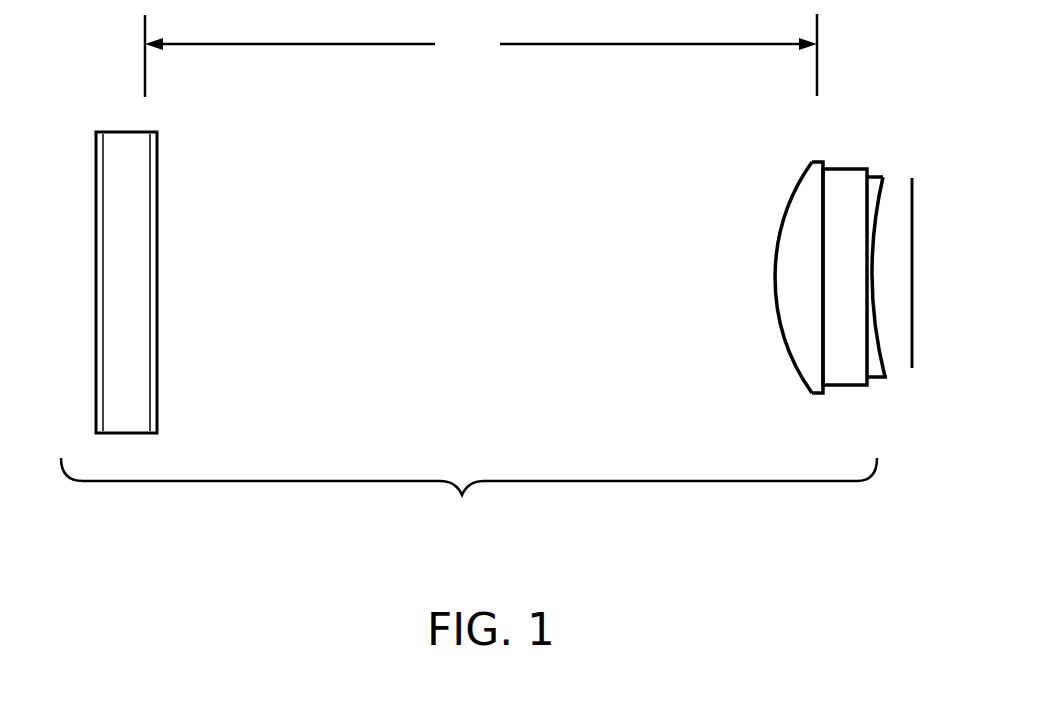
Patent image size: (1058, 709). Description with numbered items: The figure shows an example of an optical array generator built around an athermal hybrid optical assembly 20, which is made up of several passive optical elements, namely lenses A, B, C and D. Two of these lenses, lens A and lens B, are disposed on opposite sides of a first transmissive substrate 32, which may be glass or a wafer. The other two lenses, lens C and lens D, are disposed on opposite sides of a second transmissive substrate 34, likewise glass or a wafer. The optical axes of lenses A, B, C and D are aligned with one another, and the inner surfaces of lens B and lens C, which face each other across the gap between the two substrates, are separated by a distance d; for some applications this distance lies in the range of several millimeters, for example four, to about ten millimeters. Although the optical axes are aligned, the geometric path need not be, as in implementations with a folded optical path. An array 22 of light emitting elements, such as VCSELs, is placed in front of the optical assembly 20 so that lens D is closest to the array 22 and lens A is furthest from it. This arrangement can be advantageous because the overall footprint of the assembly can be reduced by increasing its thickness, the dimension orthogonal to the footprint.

The distance d is at (481, 55).
The lens A is at (100, 165).
The lens B is at (150, 162).
The lens C is at (790, 207).
The lens D is at (875, 187).
The first transmissive substrate 32 is at (128, 254).
The second transmissive substrate 34 is at (847, 273).
The array of light emitting elements 22 is at (913, 222).
The hybrid optical assembly 20 is at (469, 491).